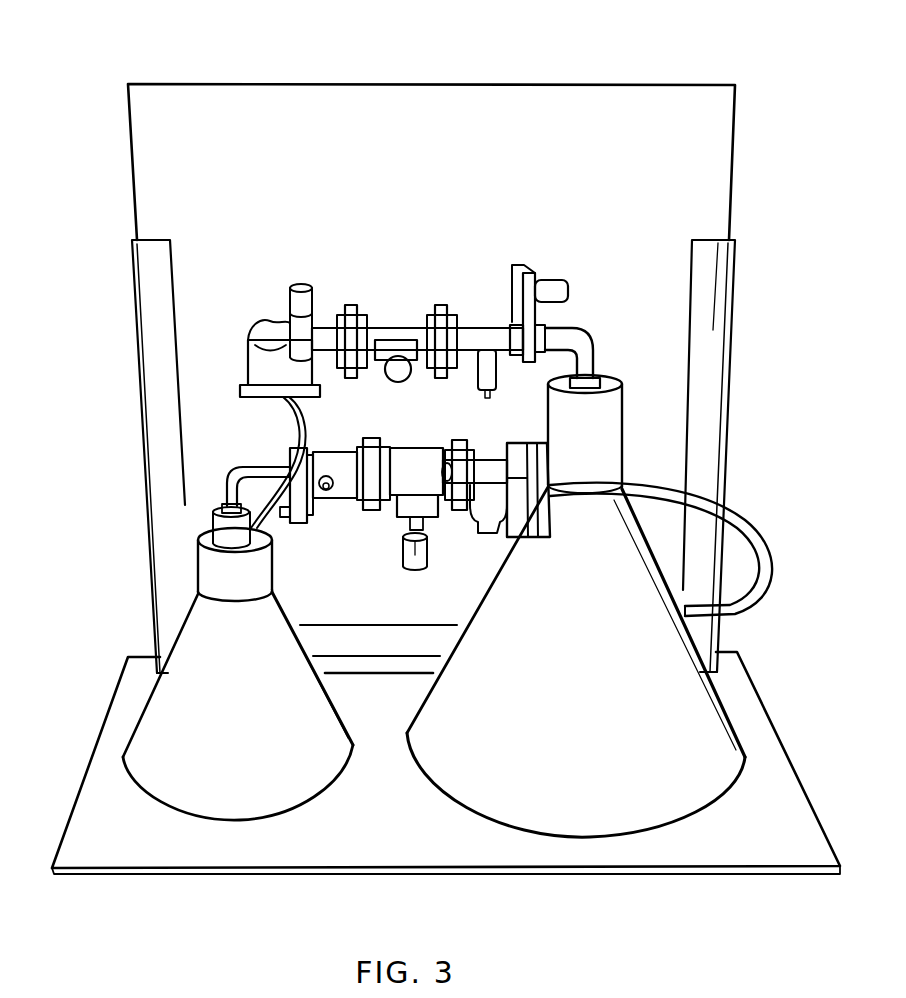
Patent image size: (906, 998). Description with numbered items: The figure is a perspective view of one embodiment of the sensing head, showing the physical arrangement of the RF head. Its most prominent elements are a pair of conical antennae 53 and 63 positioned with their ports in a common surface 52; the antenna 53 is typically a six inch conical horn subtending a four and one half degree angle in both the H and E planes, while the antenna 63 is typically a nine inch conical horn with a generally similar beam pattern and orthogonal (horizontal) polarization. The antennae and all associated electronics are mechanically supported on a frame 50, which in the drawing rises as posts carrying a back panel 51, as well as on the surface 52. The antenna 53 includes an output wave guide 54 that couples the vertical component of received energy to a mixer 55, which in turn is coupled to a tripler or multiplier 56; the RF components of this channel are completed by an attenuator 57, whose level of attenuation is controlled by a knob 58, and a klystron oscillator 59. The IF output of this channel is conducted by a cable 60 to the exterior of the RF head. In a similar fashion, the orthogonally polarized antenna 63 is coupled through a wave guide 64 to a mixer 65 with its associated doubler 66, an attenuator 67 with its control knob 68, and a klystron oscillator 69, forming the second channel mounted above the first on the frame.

The frame 50 is at (160, 288).
The back panel 51 is at (376, 92).
The common surface 52 is at (740, 853).
The conical antenna 53 is at (143, 752).
The output wave guide 54 is at (255, 468).
The mixer 55 is at (308, 506).
The tripler or multiplier 56 is at (336, 466).
The attenuator 57 is at (422, 468).
The knob 58 is at (424, 547).
The klystron oscillator 59 is at (468, 462).
The cable 60 is at (749, 547).
The conical antenna 63 is at (703, 703).
The wave guide 64 is at (560, 339).
The mixer 65 is at (522, 298).
The doubler 66 is at (484, 332).
The attenuator 67 is at (398, 332).
The control knob 68 is at (394, 377).
The klystron oscillator 69 is at (306, 333).